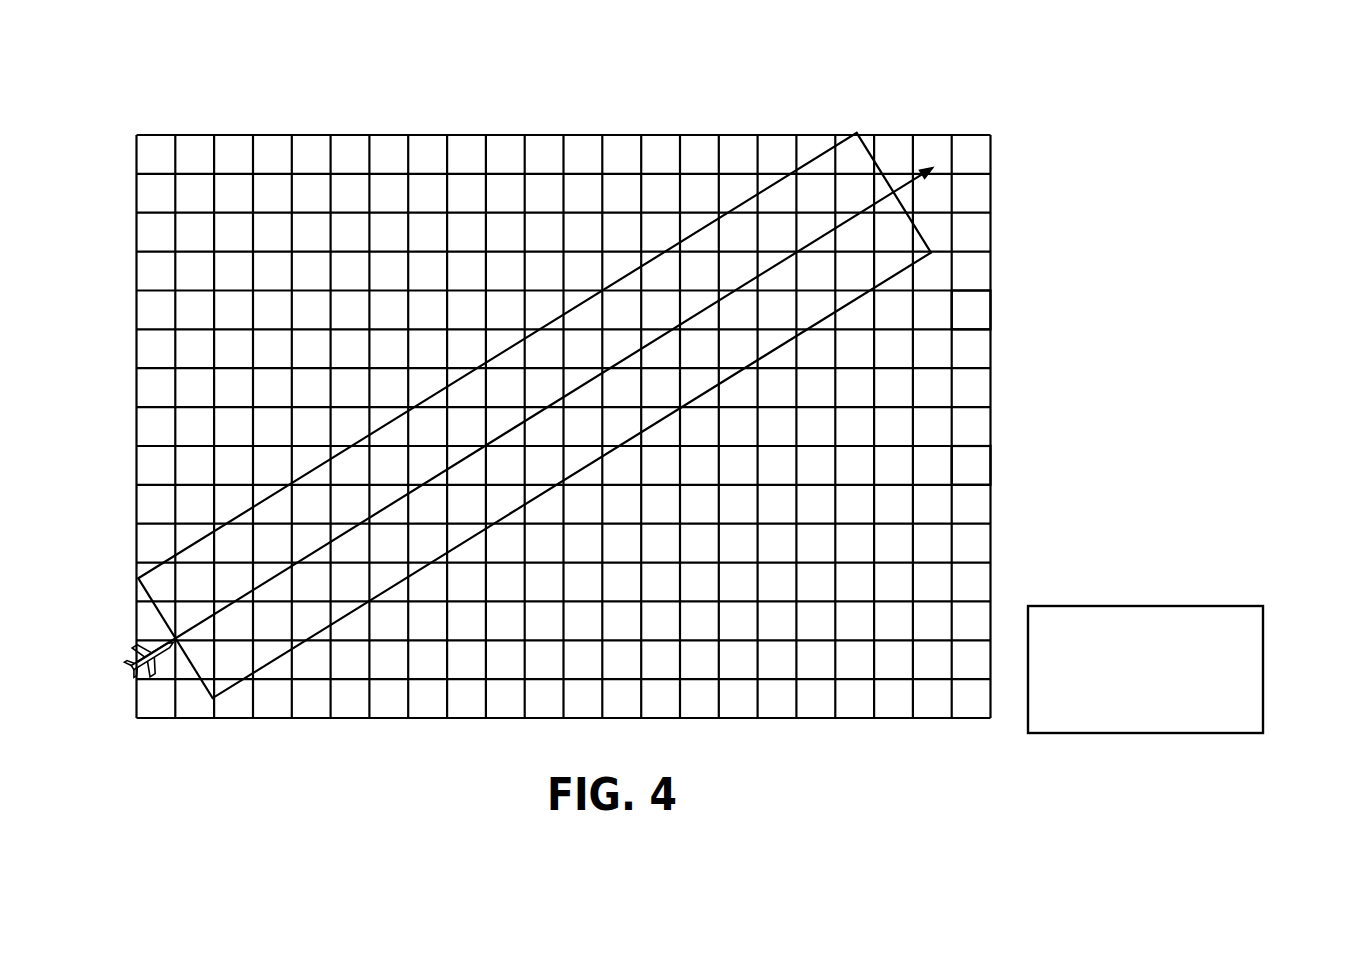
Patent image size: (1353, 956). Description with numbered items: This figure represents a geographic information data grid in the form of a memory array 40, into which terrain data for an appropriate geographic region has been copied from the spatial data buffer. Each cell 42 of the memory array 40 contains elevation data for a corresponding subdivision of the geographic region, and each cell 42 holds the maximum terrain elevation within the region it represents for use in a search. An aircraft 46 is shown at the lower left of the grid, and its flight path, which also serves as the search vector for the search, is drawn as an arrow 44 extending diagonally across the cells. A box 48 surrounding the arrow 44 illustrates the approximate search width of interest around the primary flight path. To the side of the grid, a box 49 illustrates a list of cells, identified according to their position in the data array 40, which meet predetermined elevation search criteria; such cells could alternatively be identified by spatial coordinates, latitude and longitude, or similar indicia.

The memory array 40 is at (979, 81).
The cell 42 is at (977, 312).
The arrow 44 is at (227, 607).
The aircraft 46 is at (137, 645).
The box 48 is at (197, 538).
The box 49 is at (1253, 599).